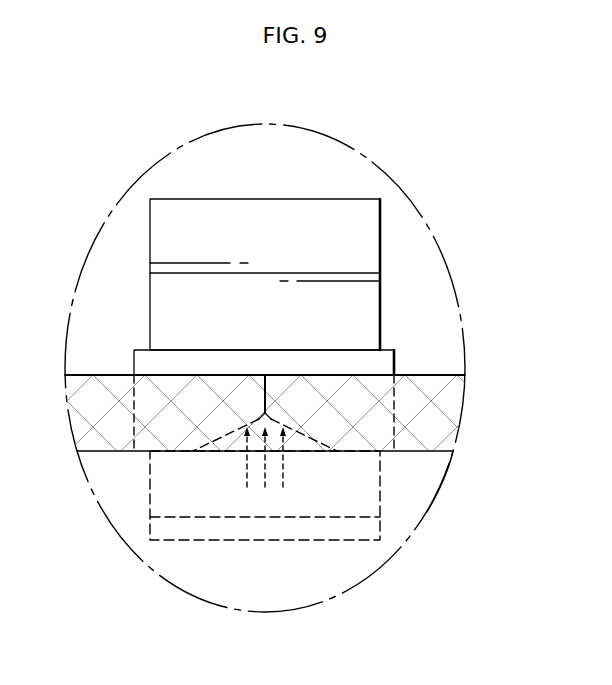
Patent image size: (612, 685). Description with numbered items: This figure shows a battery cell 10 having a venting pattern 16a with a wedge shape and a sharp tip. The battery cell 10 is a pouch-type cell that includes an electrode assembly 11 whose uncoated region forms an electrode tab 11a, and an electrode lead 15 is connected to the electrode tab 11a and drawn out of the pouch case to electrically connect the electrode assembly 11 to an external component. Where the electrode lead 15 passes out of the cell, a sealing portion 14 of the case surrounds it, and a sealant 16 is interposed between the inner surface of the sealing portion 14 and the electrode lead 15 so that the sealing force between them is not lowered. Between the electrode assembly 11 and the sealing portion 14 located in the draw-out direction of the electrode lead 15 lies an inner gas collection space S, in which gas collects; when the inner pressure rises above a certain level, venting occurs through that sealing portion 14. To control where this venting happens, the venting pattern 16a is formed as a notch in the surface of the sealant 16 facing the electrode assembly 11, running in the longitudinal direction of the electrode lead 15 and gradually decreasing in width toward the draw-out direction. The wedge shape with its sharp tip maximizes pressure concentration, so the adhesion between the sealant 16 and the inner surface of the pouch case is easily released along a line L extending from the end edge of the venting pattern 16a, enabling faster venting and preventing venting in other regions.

The battery cell 10 is at (398, 133).
The electrode lead 15 is at (380, 210).
The sealing portion 14 is at (436, 388).
The sealant 16 is at (393, 350).
The line L is at (265, 389).
The venting pattern 16a is at (295, 430).
The inner gas collection space S is at (406, 479).
The electrode assembly 11 is at (375, 558).
The electrode tab 11a is at (370, 527).